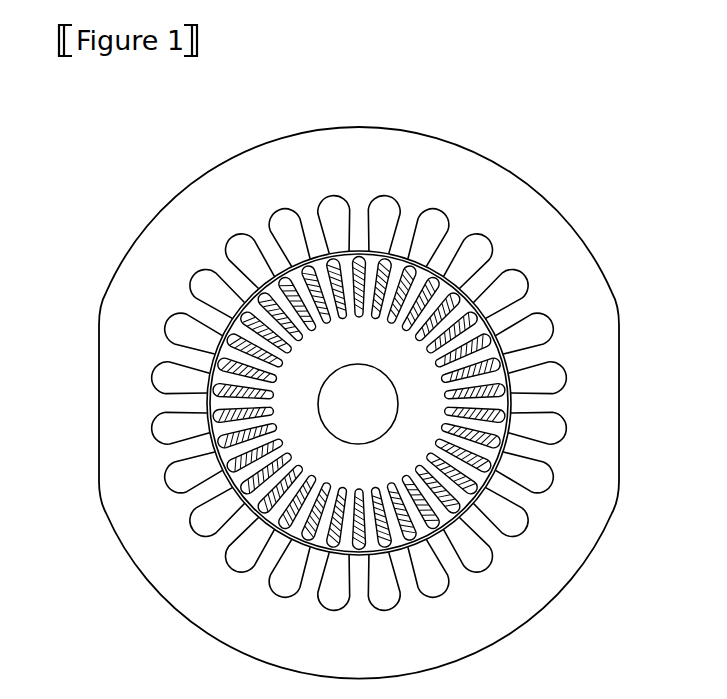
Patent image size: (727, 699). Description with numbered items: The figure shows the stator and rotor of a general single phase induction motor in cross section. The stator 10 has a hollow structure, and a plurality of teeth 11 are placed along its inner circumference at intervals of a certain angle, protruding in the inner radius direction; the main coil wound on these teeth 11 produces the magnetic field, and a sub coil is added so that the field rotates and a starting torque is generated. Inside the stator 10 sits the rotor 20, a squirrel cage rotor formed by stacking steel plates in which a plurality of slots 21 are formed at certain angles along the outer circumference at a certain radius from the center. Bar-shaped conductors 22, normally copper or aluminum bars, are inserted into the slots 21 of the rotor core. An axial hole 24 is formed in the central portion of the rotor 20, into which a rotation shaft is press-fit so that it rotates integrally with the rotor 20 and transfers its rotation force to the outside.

The stator 10 is at (553, 195).
The teeth 11 is at (538, 398).
The rotor 20 is at (273, 309).
The slots 21 is at (203, 423).
The bar-shaped conductors 22 is at (237, 485).
The axial hole 24 is at (328, 390).